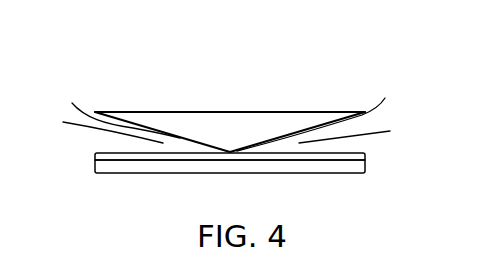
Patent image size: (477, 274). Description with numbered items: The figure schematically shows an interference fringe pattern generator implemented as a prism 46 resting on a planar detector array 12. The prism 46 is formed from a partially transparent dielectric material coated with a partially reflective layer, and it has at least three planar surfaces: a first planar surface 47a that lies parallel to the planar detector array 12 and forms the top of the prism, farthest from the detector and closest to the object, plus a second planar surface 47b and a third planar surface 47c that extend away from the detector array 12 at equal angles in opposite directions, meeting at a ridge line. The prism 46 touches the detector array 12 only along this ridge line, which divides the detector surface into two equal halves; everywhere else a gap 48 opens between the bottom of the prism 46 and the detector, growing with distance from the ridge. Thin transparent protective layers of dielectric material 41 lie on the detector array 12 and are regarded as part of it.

The planar detector array 12 is at (365, 167).
The layers of dielectric material 41 is at (95, 157).
The prism 46 is at (260, 78).
The first planar surface 47a is at (230, 112).
The second planar surface 47b is at (320, 110).
The third planar surface 47c is at (117, 105).
The gap 48 is at (228, 127).